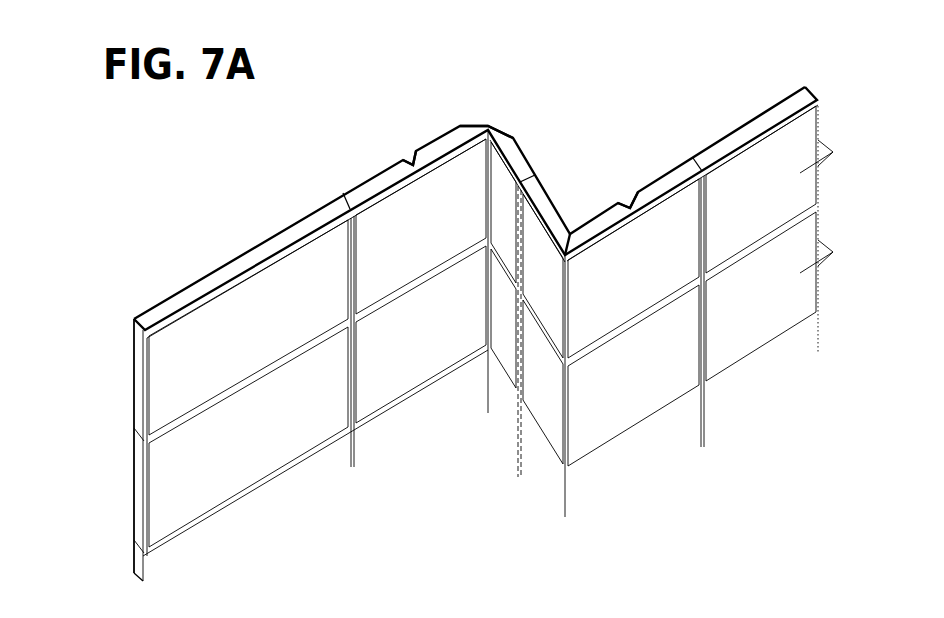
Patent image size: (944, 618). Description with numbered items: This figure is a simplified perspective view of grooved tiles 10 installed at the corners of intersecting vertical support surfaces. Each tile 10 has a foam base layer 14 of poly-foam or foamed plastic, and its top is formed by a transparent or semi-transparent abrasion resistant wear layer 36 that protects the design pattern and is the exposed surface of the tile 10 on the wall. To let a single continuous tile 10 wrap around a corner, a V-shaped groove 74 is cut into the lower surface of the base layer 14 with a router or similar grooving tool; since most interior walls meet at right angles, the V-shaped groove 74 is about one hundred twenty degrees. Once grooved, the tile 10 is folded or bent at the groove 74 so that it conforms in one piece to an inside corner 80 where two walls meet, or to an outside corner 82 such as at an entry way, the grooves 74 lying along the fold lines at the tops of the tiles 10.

The tile 10 is at (446, 181).
The base layer 14 is at (255, 253).
The wear layer 36 is at (428, 250).
The V-shaped groove 74 is at (410, 163).
The inside corner 80 is at (488, 207).
The outside corner 82 is at (567, 312).